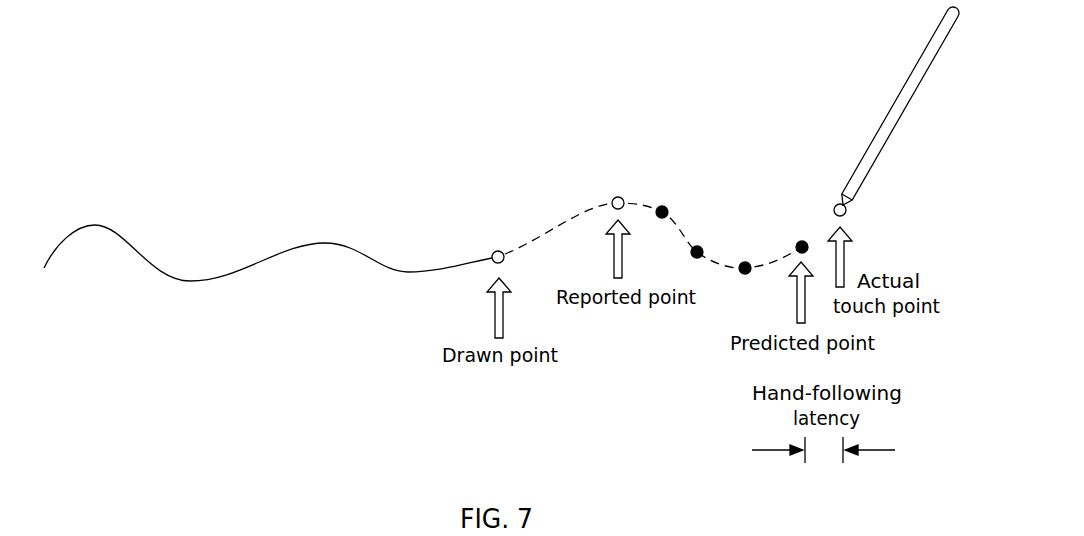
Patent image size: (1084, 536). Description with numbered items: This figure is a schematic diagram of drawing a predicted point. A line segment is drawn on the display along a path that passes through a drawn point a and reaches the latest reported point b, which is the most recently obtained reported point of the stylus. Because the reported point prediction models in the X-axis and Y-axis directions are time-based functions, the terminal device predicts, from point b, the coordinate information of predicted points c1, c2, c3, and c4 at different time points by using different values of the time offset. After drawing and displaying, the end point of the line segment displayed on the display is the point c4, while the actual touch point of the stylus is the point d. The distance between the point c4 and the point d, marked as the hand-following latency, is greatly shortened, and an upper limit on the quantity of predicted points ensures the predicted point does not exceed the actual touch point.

The drawn point a is at (497, 243).
The latest reported point b is at (617, 189).
The predicted point c1 is at (667, 199).
The predicted point c2 is at (703, 238).
The predicted point c3 is at (748, 255).
The predicted point c4 is at (800, 234).
The actual touch point d is at (853, 212).